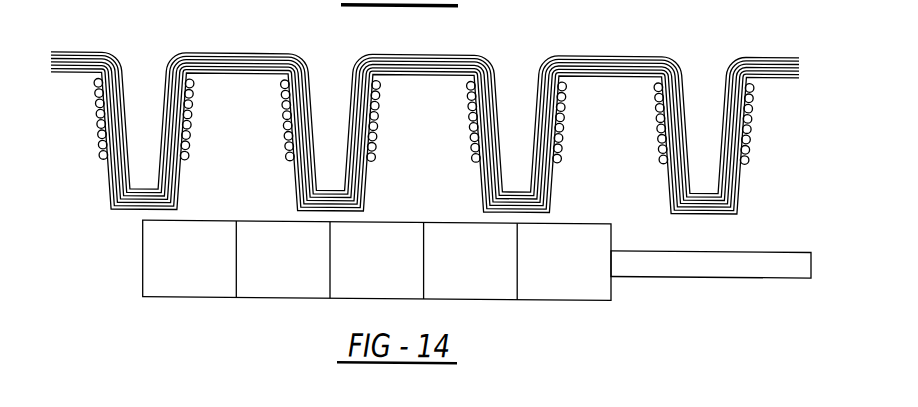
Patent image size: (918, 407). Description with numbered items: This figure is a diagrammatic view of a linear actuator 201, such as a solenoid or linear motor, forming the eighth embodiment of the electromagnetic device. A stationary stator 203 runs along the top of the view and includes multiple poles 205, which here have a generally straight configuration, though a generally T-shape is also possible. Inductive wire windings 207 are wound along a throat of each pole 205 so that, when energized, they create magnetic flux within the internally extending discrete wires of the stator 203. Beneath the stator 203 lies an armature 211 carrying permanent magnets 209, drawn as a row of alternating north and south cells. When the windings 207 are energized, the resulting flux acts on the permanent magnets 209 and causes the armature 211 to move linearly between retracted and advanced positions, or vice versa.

The linear actuator 201 is at (425, 121).
The stationary stator 203 is at (633, 57).
The pole 205 is at (120, 179).
The inductive wire windings 207 is at (187, 124).
The permanent magnets 209 is at (153, 273).
The armature 211 is at (642, 262).